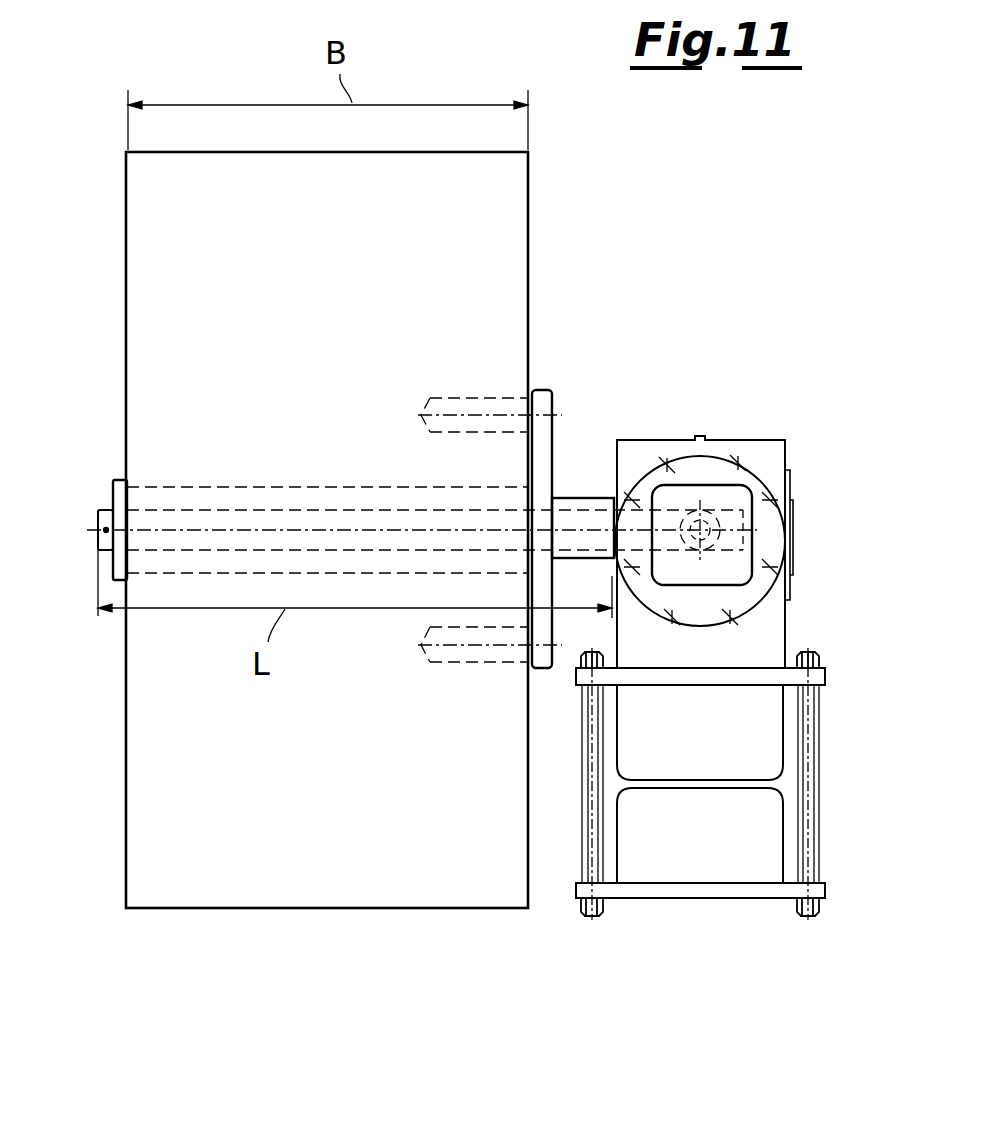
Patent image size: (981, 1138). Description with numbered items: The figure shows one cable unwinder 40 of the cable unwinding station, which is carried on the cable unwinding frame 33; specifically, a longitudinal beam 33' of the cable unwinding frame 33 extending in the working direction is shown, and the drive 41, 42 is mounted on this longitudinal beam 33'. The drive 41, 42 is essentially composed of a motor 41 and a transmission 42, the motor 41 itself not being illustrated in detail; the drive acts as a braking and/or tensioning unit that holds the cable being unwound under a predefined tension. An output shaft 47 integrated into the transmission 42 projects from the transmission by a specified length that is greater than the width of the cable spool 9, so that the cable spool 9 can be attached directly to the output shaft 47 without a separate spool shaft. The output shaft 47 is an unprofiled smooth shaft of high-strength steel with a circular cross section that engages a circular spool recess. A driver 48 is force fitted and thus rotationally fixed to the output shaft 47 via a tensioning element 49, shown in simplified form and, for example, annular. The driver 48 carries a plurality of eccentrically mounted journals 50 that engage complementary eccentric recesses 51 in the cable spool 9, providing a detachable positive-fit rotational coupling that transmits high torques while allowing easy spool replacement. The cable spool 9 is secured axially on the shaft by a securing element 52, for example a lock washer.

The cable spool 9 is at (495, 268).
The output shaft 47 is at (326, 510).
The securing element 52 is at (120, 503).
The cable unwinder 40 is at (683, 228).
The journal 50 is at (555, 475).
The recess 51 is at (508, 395).
The driver 48 is at (556, 398).
The tensioning element 49 is at (566, 500).
The motor 41 is at (746, 505).
The transmission 42 is at (772, 420).
The cable unwinding frame 33 is at (743, 749).
The longitudinal beam 33' is at (763, 784).